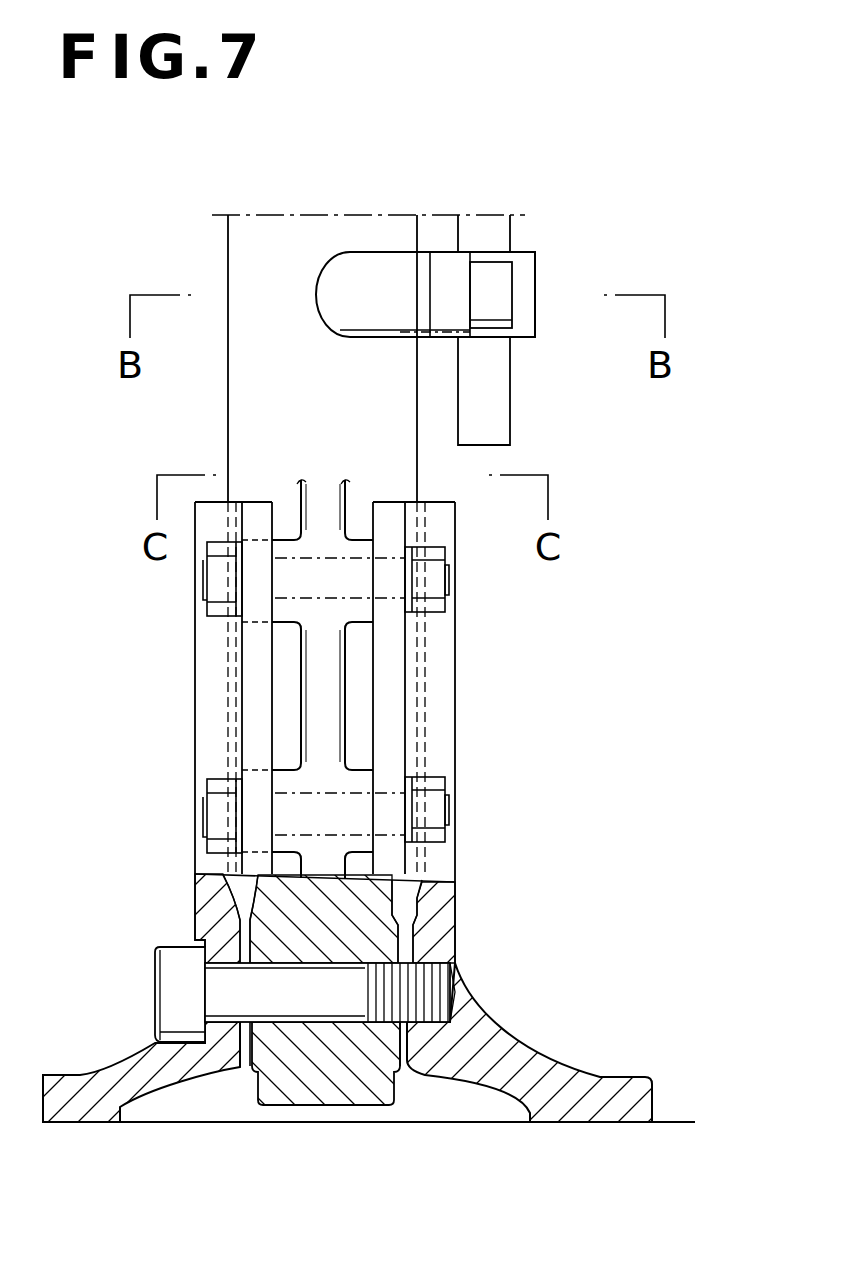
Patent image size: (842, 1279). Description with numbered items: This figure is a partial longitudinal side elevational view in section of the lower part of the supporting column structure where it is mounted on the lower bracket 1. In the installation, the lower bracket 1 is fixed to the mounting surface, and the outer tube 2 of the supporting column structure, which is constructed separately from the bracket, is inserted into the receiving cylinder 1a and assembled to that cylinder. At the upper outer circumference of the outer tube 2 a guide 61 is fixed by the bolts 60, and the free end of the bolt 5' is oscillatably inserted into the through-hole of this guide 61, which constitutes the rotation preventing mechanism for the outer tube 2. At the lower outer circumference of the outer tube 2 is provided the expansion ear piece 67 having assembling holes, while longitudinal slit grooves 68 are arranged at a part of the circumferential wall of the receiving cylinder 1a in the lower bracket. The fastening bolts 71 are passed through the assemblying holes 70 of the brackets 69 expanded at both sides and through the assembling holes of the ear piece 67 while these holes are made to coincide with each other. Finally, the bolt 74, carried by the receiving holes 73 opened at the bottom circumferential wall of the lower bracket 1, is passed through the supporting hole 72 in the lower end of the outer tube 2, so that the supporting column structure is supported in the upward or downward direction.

The lower bracket 1 is at (600, 1085).
The receiving cylinder 1a is at (455, 735).
The outer tube 2 is at (228, 250).
The bolt 5' is at (462, 286).
The bolts 60 is at (492, 302).
The guide 61 is at (520, 283).
The expansion ear piece 67 is at (330, 690).
The longitudinal slit grooves 68 is at (280, 690).
The brackets 69 is at (262, 520).
The assemblying holes 70 is at (390, 555).
The fastening bolts 71 is at (430, 595).
The supporting hole 72 is at (368, 1108).
The receiving holes 73 is at (455, 925).
The bolt 74 is at (450, 975).